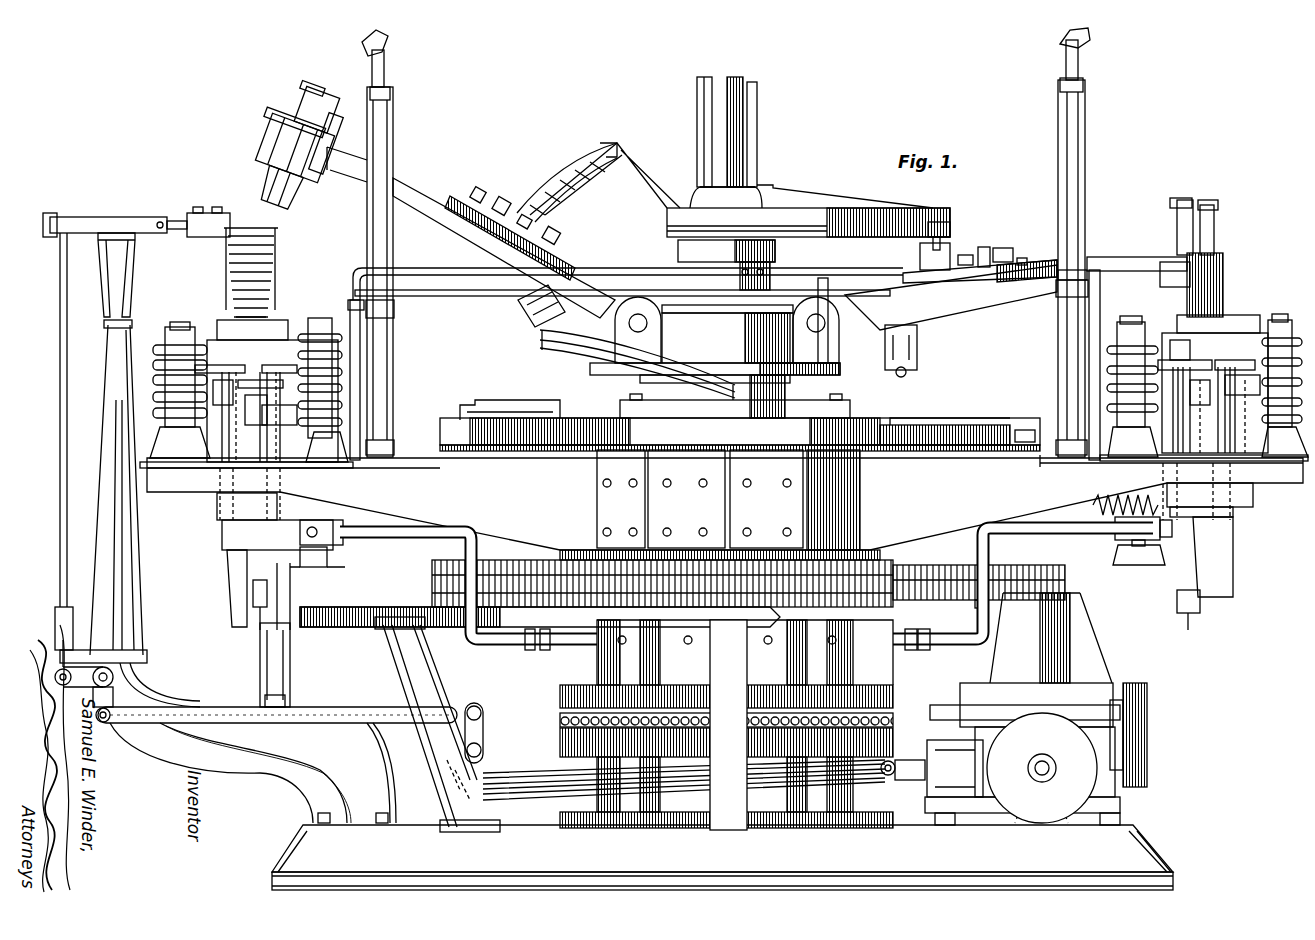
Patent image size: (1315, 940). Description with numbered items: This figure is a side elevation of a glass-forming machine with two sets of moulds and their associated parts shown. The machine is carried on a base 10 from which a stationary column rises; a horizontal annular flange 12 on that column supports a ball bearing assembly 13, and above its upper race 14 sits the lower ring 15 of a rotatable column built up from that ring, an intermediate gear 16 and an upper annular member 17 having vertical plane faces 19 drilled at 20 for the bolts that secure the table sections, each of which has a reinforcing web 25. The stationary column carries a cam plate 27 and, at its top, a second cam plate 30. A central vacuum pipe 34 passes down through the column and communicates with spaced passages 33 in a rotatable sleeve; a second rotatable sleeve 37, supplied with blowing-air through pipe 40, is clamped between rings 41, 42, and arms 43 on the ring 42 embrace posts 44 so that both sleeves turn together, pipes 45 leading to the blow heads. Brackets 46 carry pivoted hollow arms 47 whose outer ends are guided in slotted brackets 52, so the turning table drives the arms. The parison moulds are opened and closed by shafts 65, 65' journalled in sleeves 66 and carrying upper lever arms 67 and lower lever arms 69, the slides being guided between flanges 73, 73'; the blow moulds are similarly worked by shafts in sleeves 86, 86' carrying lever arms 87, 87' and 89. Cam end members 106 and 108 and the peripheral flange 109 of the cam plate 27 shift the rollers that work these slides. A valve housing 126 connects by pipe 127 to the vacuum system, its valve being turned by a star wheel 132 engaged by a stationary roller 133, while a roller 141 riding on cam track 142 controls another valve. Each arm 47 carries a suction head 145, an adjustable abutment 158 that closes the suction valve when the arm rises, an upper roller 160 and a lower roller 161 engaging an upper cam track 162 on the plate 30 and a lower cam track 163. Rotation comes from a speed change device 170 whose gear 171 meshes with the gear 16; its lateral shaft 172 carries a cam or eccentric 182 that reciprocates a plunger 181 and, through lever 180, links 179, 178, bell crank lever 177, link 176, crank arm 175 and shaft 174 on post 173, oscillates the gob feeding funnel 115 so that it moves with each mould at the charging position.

The base 10 is at (1130, 848).
The horizontal annular flange 12 is at (557, 740).
The ball bearing assembly 13 is at (758, 710).
The upper race 14 is at (557, 705).
The lower ring 15 is at (706, 725).
The intermediate gear 16 is at (440, 575).
The upper annular member 17 is at (858, 524).
The vertically disposed plane faces 19 is at (766, 499).
The drilled holes 20 is at (672, 530).
The reinforcing web 25 is at (725, 504).
The stationary cam plate 27 is at (565, 452).
The second cam plate 30 is at (780, 215).
The spaced passages 33 is at (49, 561).
The central vacuum pipe 34 is at (725, 80).
The second rotatable sleeve 37 is at (788, 272).
The blowing-air pipe 40 is at (700, 105).
The ring 41 is at (680, 250).
The ring 42 is at (752, 302).
The outwardly projecting arms 43 is at (805, 292).
The posts 44 is at (840, 306).
The pipes 45 is at (388, 334).
The bifurcated upstanding brackets 46 is at (645, 345).
The hollow arm 47 is at (440, 200).
The vertically slotted bracket 52 is at (393, 122).
The shaft 65 is at (1235, 553).
The shaft 65' is at (246, 517).
The upstanding sleeve 66 is at (227, 440).
The lever arm 67 is at (215, 368).
The lever arm 69 is at (215, 512).
The guide flange 73 is at (1033, 419).
The guide flange 73' is at (1041, 474).
The upstanding sleeve 86 is at (1175, 475).
The upstanding sleeve 86' is at (321, 464).
The lever arm 87 is at (1187, 376).
The lever arm 87' is at (246, 381).
The lower lever arm 89 is at (1200, 542).
The cam end member 106 is at (530, 405).
The cam member 108 is at (687, 410).
The peripheral flange 109 is at (985, 422).
The gob feeding funnel 115 is at (275, 265).
The valve housing 126 is at (1135, 530).
The pipe 127 is at (566, 645).
The four-pointed star wheel 132 is at (345, 541).
The stationary adjustable roller 133 is at (300, 578).
The roller 141 is at (258, 597).
The cam track 142 is at (330, 622).
The suction head 145 is at (275, 162).
The adjustable abutment 158 is at (366, 48).
The upwardly disposed roller 160 is at (525, 205).
The downwardly projecting roller 161 is at (525, 330).
The upper cam track 162 is at (568, 170).
The lower cam track 163 is at (545, 350).
The speed change device 170 is at (1080, 668).
The gear 171 is at (1058, 566).
The lateral shaft 172 is at (1043, 778).
The stationary post 173 is at (130, 597).
The horizontally oscillating shaft 174 is at (180, 215).
The crank arm 175 is at (75, 215).
The link 176 is at (60, 365).
The bell crank lever 177 is at (108, 690).
The link 178 is at (320, 707).
The link 179 is at (548, 787).
The lever 180 is at (478, 706).
The sliding plunger 181 is at (889, 778).
The cam or eccentric 182 is at (1010, 782).